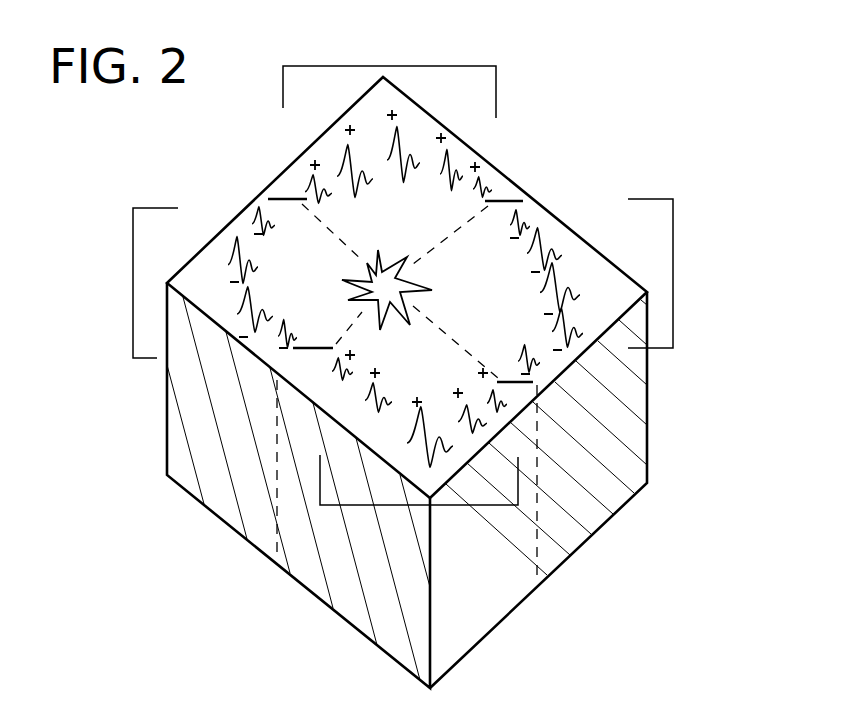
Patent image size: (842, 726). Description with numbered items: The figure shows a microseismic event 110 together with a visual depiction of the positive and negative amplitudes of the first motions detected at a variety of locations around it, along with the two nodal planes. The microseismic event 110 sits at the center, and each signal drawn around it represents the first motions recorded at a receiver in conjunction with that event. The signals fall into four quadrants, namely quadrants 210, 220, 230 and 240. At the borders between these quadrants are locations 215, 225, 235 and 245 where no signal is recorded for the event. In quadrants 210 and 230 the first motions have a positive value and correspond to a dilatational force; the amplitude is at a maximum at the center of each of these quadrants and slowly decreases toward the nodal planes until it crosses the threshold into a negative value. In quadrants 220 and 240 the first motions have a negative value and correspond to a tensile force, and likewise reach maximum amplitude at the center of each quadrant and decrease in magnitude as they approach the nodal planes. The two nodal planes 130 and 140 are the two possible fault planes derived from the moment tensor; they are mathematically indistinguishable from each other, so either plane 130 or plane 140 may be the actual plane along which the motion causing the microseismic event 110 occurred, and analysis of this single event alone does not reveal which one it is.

The microseismic event 110 is at (415, 282).
The quadrant 210 is at (425, 66).
The quadrant 220 is at (673, 272).
The quadrant 230 is at (472, 507).
The quadrant 240 is at (133, 280).
The location 215 is at (510, 195).
The location 225 is at (533, 383).
The location 235 is at (296, 350).
The location 245 is at (275, 197).
The nodal plane 130 is at (538, 528).
The nodal plane 140 is at (275, 518).